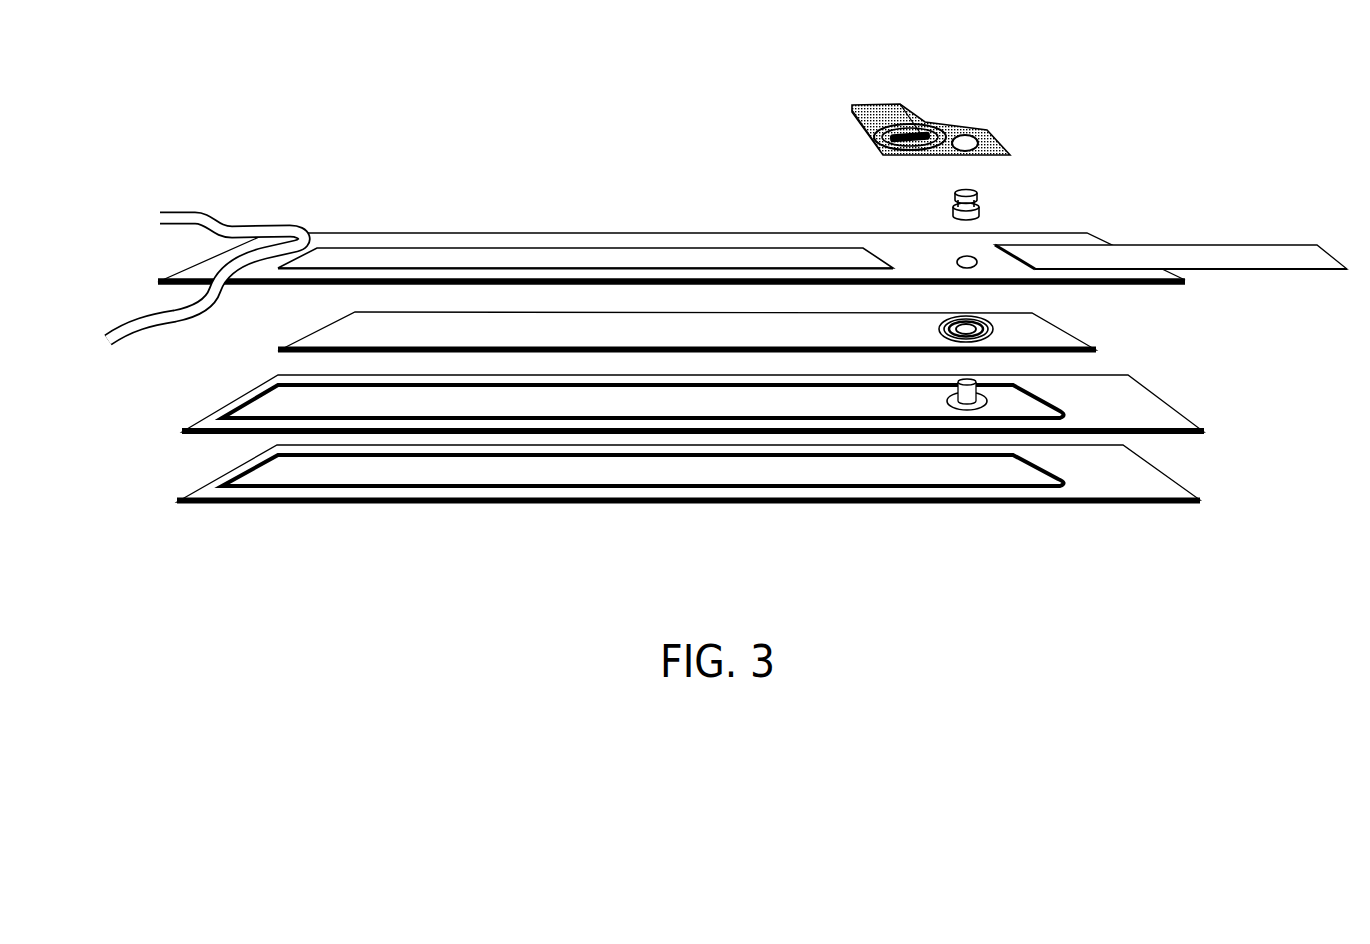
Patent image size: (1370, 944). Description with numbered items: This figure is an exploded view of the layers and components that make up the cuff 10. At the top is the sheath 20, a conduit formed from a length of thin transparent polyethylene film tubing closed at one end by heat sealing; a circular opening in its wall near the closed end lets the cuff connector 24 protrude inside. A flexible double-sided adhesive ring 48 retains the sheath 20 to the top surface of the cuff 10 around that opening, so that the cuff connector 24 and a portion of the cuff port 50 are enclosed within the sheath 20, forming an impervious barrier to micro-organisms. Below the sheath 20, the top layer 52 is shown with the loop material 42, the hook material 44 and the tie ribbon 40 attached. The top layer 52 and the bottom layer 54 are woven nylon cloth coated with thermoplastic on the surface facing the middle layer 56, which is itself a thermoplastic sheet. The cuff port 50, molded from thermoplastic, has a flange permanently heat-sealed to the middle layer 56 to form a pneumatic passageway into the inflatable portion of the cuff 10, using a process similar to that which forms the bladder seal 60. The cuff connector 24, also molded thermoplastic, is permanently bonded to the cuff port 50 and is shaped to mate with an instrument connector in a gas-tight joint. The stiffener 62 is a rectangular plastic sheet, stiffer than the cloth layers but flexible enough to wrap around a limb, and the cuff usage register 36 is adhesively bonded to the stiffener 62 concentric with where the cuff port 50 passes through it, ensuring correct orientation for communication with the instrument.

The cuff 10 is at (727, 329).
The sheath 20 is at (902, 103).
The cuff connector 24 is at (982, 207).
The cuff usage register 36 is at (978, 325).
The tie ribbon 40 is at (213, 222).
The loop material 42 is at (773, 255).
The hook material 44 is at (1208, 246).
The adhesive ring 48 is at (978, 139).
The cuff port 50 is at (985, 388).
The top layer 52 is at (1185, 281).
The bottom layer 54 is at (1200, 500).
The middle layer 56 is at (1204, 432).
The bladder seal 60 is at (503, 418).
The stiffener 62 is at (277, 351).